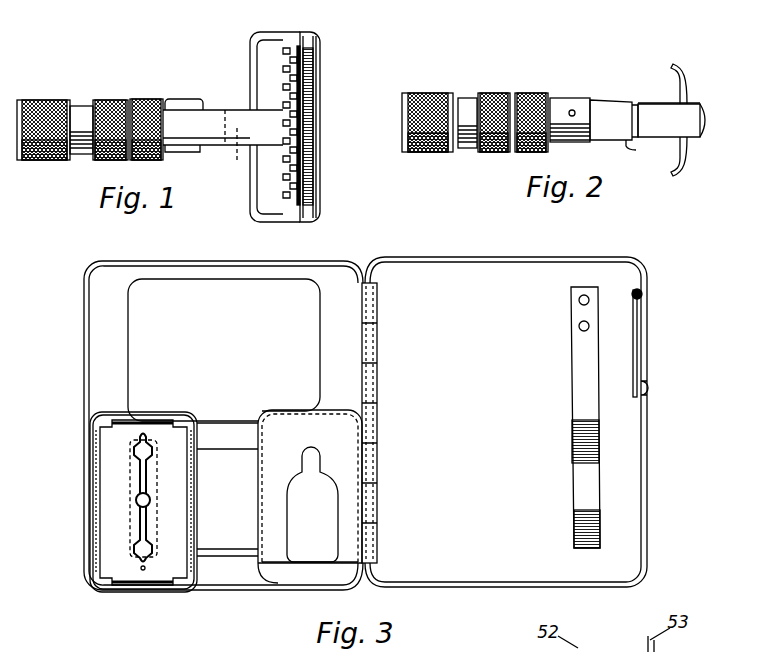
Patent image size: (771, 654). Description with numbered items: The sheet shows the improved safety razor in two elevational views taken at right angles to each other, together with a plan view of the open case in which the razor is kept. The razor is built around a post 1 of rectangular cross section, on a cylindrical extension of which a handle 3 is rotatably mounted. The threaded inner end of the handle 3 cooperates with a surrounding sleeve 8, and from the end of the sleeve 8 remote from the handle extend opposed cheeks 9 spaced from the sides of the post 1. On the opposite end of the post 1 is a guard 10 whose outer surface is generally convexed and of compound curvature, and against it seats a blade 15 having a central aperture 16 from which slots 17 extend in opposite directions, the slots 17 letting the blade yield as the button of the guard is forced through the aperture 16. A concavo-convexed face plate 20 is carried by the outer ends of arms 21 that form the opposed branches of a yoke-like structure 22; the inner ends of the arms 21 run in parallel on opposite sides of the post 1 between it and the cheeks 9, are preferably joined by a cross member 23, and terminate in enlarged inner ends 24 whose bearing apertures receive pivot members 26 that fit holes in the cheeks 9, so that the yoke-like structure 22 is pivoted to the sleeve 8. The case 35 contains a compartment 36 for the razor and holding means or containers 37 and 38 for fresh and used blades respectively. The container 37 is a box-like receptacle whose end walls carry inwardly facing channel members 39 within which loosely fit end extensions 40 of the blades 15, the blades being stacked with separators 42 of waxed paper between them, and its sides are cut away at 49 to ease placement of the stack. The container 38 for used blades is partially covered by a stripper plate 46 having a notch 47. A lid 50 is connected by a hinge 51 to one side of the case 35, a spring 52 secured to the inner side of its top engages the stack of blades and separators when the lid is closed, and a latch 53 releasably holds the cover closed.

In FIG. 1, the post 1 is at (198, 125).
In FIG. 1, the handle 3 is at (40, 105).
In FIG. 2, the handle 3 is at (430, 95).
In FIG. 1, the sleeve 8 is at (108, 103).
In FIG. 2, the sleeve 8 is at (497, 152).
In FIG. 1, the cheeks 9 is at (170, 113).
In FIG. 2, the cheeks 9 is at (563, 99).
In FIG. 1, the guard 10 is at (290, 172).
In FIG. 2, the guard 10 is at (683, 72).
In FIG. 1, the blade 15 is at (303, 80).
In FIG. 2, the blade 15 is at (690, 155).
In FIG. 3, the blade 15 is at (110, 540).
In FIG. 3, the central aperture 16 is at (137, 501).
In FIG. 3, the slots 17 is at (145, 478).
In FIG. 1, the face plate 20 is at (313, 135).
In FIG. 2, the face plate 20 is at (702, 92).
In FIG. 1, the arms 21 is at (274, 32).
In FIG. 2, the arms 21 is at (657, 115).
In FIG. 1, the yoke-like structure 22 is at (247, 47).
In FIG. 2, the yoke-like structure 22 is at (624, 98).
In FIG. 1, the cross member 23 is at (232, 155).
In FIG. 2, the cross member 23 is at (644, 152).
In FIG. 1, the enlarged inner ends 24 is at (166, 104).
In FIG. 2, the enlarged inner ends 24 is at (614, 120).
In FIG. 2, the pivot members 26 is at (576, 111).
In FIG. 3, the case 35 is at (84, 356).
In FIG. 3, the compartment 36 is at (224, 350).
In FIG. 3, the holding means or container 37 is at (95, 587).
In FIG. 3, the holding means or container 38 is at (298, 573).
In FIG. 3, the channel members 39 is at (185, 415).
In FIG. 3, the end extensions 40 is at (143, 425).
In FIG. 3, the separators 42 is at (146, 570).
In FIG. 3, the stripper plate 46 is at (345, 438).
In FIG. 3, the notch 47 is at (291, 483).
In FIG. 3, the cut away portions 49 is at (92, 481).
In FIG. 3, the lid 50 is at (478, 258).
In FIG. 3, the hinge 51 is at (375, 355).
In FIG. 3, the spring 52 is at (571, 417).
In FIG. 3, the latch 53 is at (635, 366).